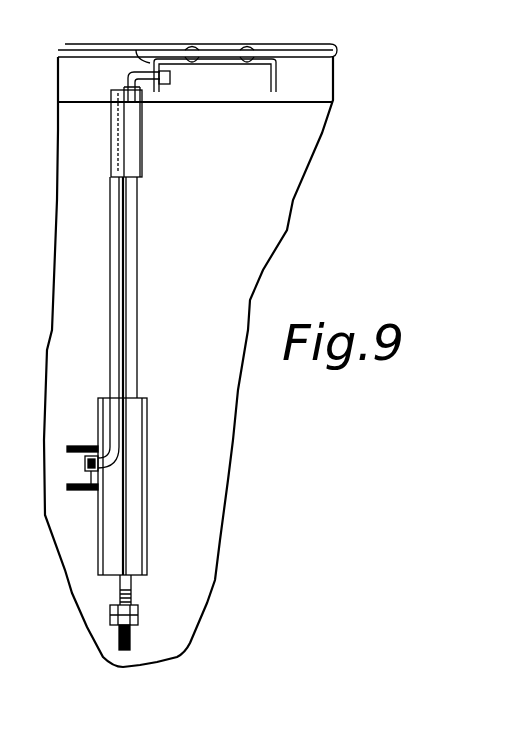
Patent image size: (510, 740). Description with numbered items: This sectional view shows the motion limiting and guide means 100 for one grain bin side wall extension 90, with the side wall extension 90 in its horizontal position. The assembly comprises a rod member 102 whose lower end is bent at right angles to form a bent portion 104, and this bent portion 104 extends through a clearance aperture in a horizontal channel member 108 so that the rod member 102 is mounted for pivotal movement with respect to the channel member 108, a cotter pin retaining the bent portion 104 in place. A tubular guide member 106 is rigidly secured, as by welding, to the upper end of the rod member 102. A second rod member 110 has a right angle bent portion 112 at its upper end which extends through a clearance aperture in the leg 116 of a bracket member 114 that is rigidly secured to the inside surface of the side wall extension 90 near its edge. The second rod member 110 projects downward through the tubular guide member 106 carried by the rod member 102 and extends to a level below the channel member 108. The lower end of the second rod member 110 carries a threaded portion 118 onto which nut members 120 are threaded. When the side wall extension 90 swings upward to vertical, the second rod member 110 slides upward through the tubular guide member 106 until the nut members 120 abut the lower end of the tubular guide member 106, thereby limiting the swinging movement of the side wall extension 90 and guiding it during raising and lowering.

The grain bin side wall extension 90 is at (300, 46).
The motion limiting and guide means 100 is at (124, 375).
The rod member 102 is at (110, 322).
The bent portion 104 is at (80, 490).
The tubular guide member 106 is at (143, 153).
The horizontal channel member 108 is at (85, 449).
The second rod member 110 is at (131, 244).
The right angle bent portion 112 is at (165, 85).
The bracket member 114 is at (216, 59).
The leg 116 is at (136, 50).
The threaded portion 118 is at (118, 636).
The nut members 120 is at (139, 620).